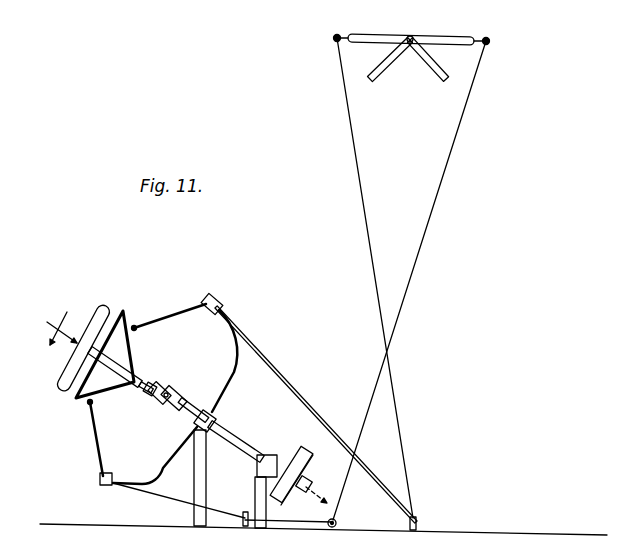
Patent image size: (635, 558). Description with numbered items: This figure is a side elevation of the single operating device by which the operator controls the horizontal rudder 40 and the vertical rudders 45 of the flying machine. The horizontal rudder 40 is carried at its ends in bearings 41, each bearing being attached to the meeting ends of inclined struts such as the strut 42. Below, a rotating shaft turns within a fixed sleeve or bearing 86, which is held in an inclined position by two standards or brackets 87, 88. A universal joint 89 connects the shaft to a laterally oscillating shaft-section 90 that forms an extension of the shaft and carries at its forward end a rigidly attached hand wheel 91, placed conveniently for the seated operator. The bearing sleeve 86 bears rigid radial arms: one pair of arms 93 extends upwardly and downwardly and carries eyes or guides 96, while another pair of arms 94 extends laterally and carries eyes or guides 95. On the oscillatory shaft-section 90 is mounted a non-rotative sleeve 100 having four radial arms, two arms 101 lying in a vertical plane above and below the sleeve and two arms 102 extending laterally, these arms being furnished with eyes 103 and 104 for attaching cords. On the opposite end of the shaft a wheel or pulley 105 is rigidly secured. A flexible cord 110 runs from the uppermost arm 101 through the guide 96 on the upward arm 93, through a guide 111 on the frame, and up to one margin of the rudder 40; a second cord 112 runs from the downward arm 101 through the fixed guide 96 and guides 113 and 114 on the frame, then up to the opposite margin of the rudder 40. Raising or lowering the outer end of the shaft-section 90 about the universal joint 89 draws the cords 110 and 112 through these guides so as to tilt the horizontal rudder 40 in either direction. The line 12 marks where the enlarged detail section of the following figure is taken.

The section line 12 is at (190, 416).
The horizontal rudder 40 is at (377, 33).
The bearing 41 is at (413, 35).
The inclined strut 42 is at (441, 83).
The vertical rudder 45 is at (372, 83).
The fixed sleeve or bearing 86 is at (237, 436).
The standard or bracket 87 is at (207, 485).
The standard or bracket 88 is at (254, 494).
The universal joint 89 is at (172, 394).
The oscillating shaft-section 90 is at (156, 388).
The hand wheel 91 is at (60, 384).
The fixed arm 93 is at (163, 459).
The fixed arm 94 is at (190, 409).
The eye or guide 95 is at (234, 372).
The eye or guide 96 is at (220, 300).
The non-rotative sleeve 100 is at (143, 388).
The vertical arm 101 is at (138, 336).
The lateral arm 102 is at (100, 371).
The eye 103 is at (138, 326).
The eye 104 is at (120, 355).
The wheel or pulley 105 is at (292, 452).
The flexible cord 110 is at (362, 186).
The guide 111 is at (417, 530).
The cord or rope 112 is at (433, 206).
The guide 113 is at (246, 526).
The guide 114 is at (334, 527).